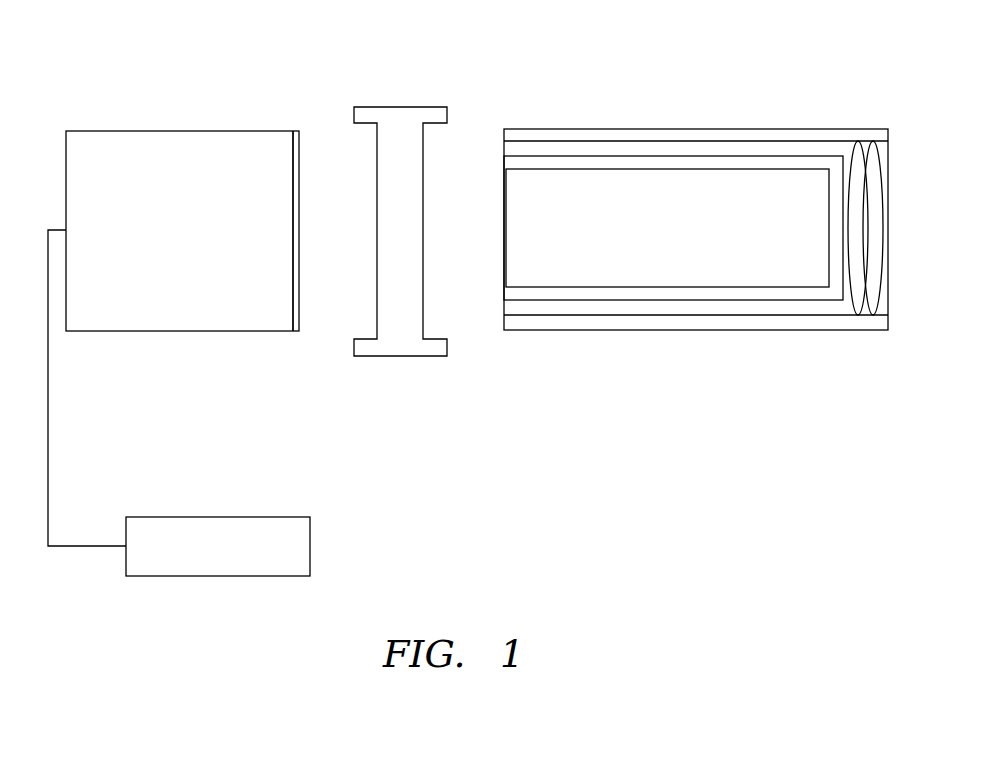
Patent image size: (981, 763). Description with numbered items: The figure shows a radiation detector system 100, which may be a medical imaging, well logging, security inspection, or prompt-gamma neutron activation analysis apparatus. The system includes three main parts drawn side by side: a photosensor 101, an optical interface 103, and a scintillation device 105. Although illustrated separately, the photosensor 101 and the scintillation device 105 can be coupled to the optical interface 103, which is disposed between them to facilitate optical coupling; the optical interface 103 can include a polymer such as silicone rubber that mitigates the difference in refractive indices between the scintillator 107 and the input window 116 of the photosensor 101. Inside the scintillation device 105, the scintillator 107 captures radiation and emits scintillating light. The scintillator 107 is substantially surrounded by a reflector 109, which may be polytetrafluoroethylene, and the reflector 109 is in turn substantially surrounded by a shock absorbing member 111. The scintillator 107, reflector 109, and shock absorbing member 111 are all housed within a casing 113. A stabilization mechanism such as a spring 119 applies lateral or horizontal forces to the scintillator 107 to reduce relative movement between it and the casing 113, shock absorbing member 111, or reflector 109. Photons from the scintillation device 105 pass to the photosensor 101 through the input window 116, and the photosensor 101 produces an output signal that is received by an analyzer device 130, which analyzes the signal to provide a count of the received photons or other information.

The radiation detector system 100 is at (128, 58).
The photosensor 101 is at (202, 243).
The input window 116 is at (300, 245).
The analyzer device 130 is at (222, 517).
The optical interface 103 is at (393, 357).
The scintillation device 105 is at (706, 259).
The casing 113 is at (558, 129).
The shock absorbing member 111 is at (643, 148).
The reflector 109 is at (742, 165).
The scintillator 107 is at (688, 243).
The spring 119 is at (867, 143).